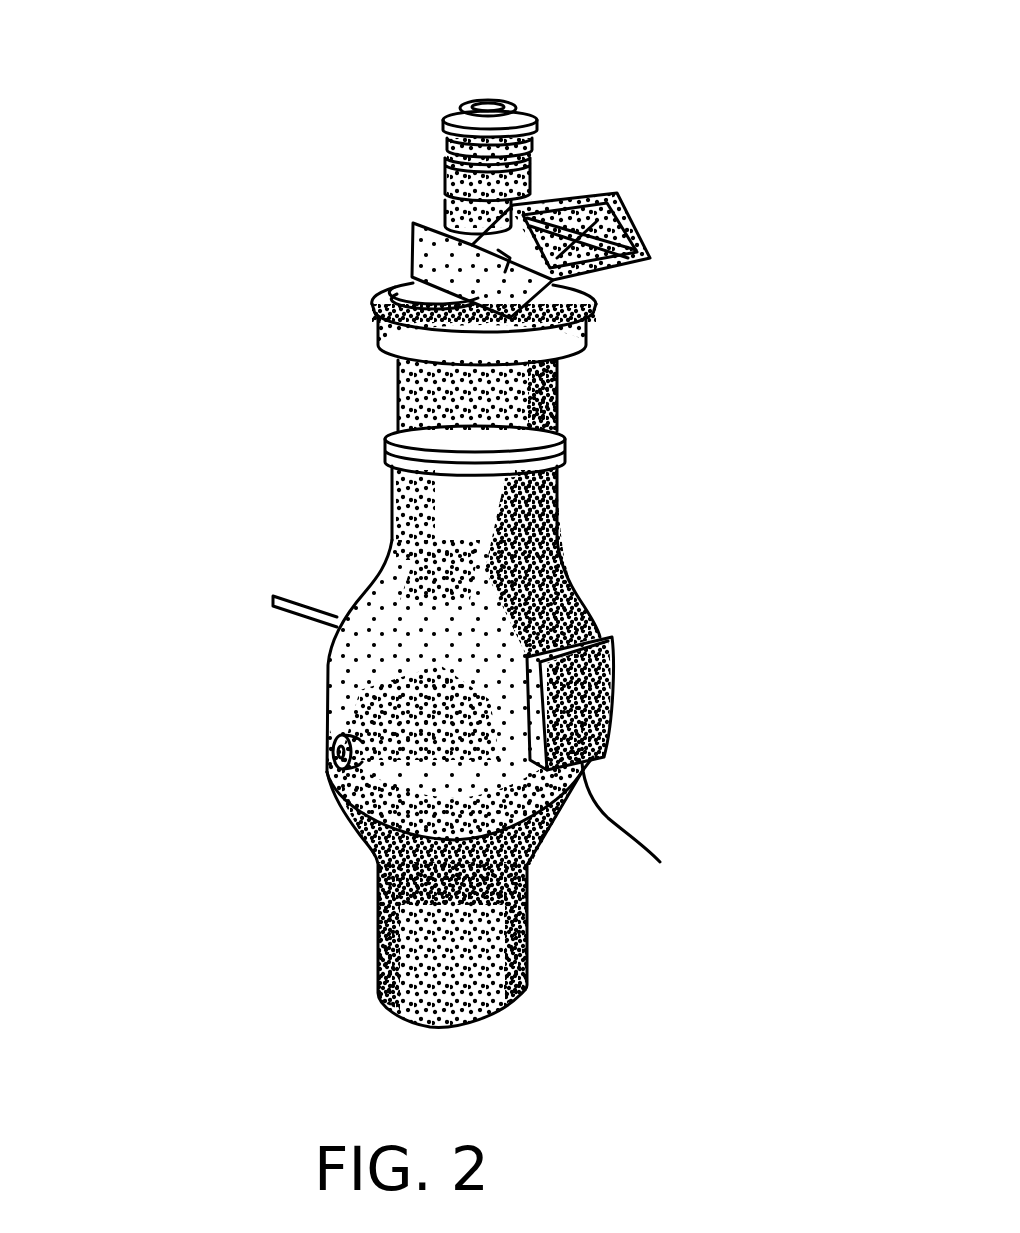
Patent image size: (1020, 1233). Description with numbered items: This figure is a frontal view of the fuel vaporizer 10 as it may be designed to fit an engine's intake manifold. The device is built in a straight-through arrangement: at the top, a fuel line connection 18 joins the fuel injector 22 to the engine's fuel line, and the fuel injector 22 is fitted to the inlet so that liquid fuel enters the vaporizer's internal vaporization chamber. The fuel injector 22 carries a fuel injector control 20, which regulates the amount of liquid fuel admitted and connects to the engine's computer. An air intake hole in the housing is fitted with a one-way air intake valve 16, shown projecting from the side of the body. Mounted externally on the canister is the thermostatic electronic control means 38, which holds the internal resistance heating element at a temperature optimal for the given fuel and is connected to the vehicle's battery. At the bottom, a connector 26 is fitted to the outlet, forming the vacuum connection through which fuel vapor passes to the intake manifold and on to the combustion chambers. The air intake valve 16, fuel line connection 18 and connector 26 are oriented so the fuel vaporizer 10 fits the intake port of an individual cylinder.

The fuel vaporizer 10 is at (200, 50).
The one-way air intake valve 16 is at (295, 597).
The fuel line connection 18 is at (505, 98).
The fuel injector control 20 is at (622, 228).
The fuel injector 22 is at (560, 388).
The connector 26 is at (487, 970).
The thermostatic electronic control means 38 is at (592, 675).